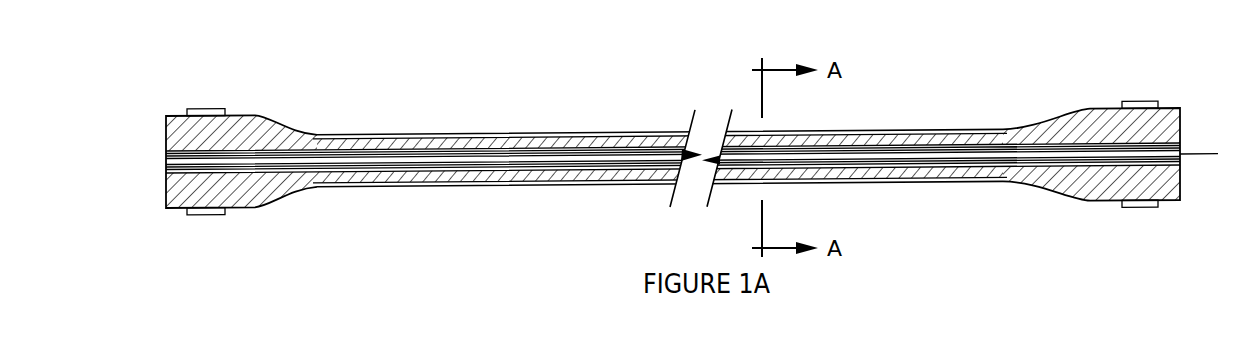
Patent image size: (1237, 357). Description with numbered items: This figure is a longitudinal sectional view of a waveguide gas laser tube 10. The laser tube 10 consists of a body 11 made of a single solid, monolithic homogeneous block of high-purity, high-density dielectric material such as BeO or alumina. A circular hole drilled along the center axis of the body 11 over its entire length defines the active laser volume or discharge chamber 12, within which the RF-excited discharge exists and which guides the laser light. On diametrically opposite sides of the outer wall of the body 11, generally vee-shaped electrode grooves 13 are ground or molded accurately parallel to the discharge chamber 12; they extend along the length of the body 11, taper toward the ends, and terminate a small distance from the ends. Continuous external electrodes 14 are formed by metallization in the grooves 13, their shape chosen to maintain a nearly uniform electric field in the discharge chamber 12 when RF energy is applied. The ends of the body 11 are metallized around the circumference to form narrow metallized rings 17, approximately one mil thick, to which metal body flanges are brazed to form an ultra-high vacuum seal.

The laser tube 10 is at (430, 218).
The body 11 is at (1174, 108).
The discharge chamber 12 is at (167, 170).
The electrode grooves 13 is at (911, 137).
The external electrodes 14 is at (597, 132).
The metallized ring 17 is at (207, 109).